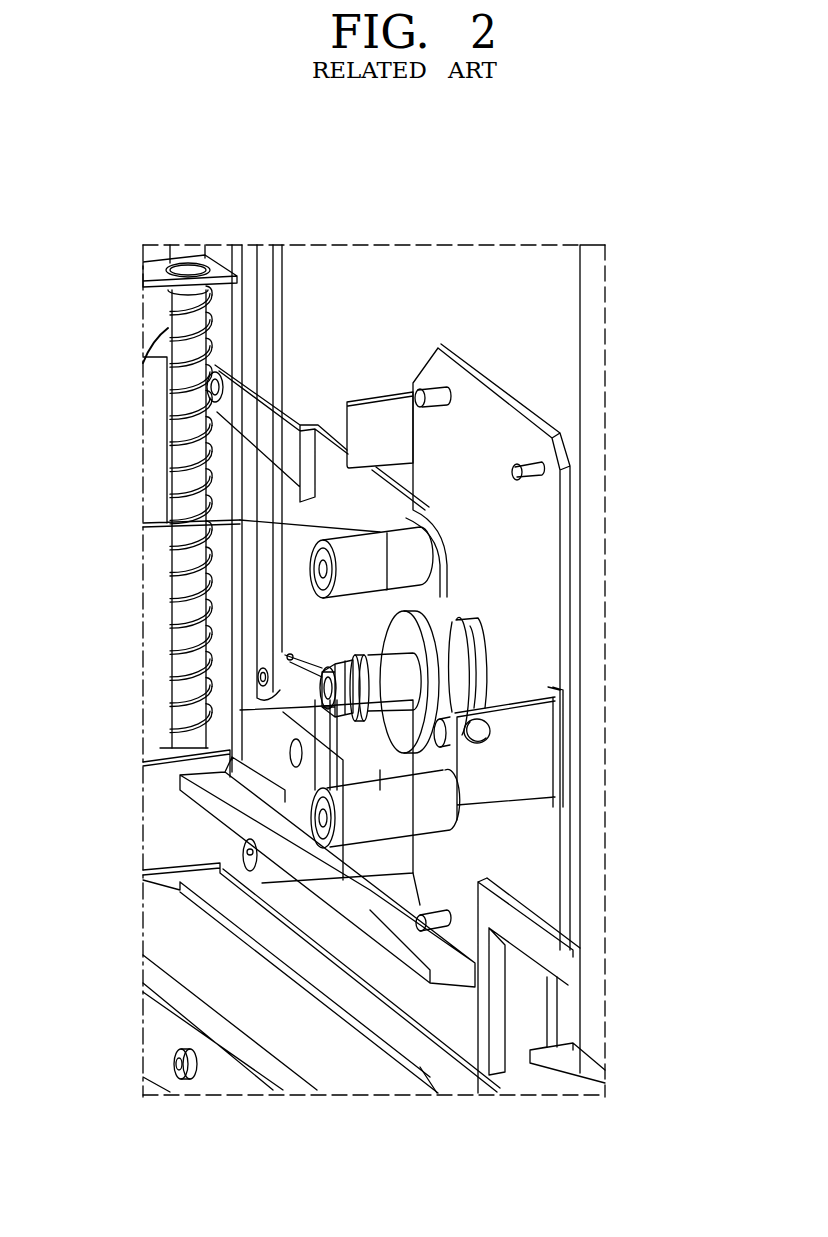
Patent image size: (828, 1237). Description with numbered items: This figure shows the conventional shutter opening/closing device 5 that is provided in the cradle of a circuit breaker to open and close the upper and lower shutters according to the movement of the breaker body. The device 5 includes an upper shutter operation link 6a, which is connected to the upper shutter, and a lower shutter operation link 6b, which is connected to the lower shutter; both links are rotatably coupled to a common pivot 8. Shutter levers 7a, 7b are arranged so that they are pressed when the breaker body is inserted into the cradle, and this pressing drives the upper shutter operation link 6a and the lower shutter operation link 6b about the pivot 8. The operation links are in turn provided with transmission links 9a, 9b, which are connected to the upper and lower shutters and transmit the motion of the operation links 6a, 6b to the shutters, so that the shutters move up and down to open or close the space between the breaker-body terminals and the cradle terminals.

The shutter opening/closing device 5 is at (707, 206).
The upper shutter operation link 6a is at (305, 707).
The lower shutter operation link 6b is at (245, 432).
The shutter lever 7a is at (322, 818).
The shutter lever 7b is at (325, 568).
The pivot 8 is at (322, 686).
The transmission link 9a is at (263, 490).
The transmission link 9b is at (225, 322).